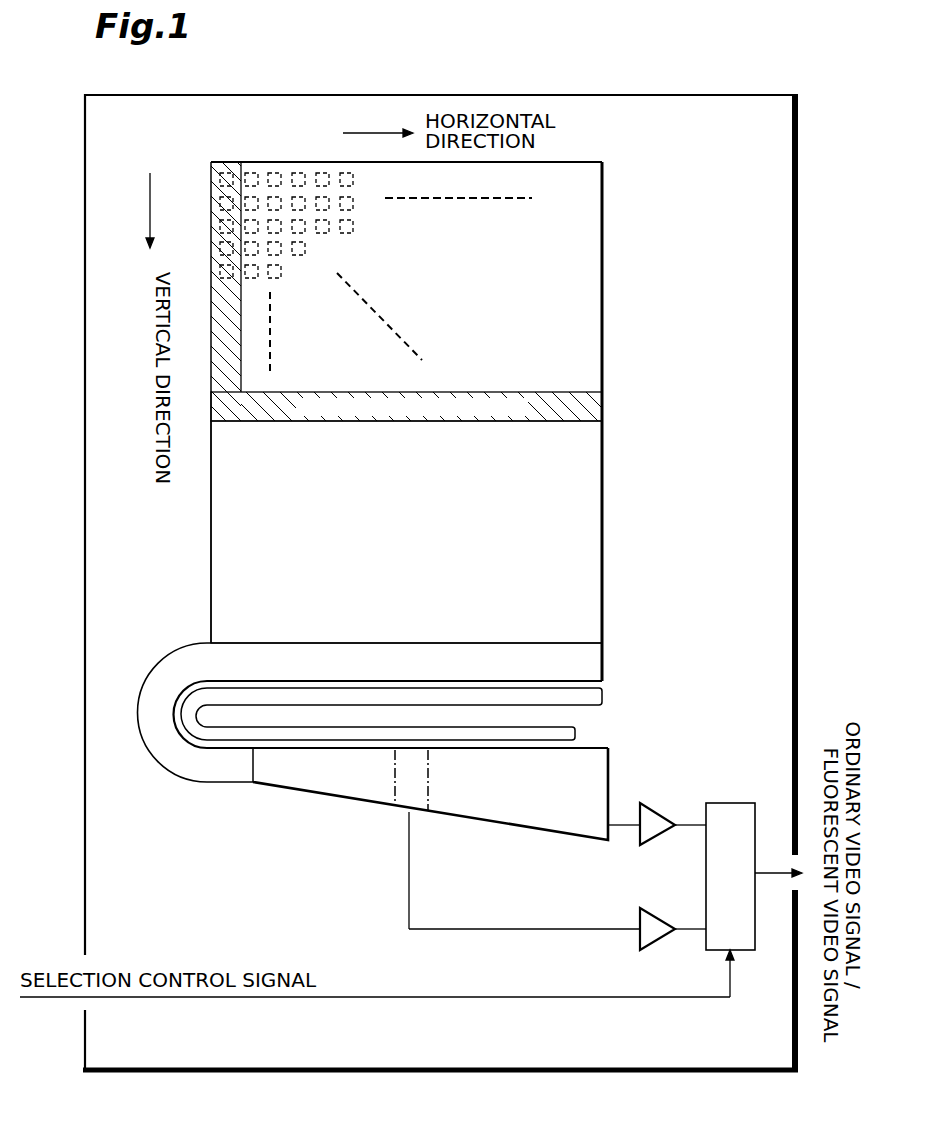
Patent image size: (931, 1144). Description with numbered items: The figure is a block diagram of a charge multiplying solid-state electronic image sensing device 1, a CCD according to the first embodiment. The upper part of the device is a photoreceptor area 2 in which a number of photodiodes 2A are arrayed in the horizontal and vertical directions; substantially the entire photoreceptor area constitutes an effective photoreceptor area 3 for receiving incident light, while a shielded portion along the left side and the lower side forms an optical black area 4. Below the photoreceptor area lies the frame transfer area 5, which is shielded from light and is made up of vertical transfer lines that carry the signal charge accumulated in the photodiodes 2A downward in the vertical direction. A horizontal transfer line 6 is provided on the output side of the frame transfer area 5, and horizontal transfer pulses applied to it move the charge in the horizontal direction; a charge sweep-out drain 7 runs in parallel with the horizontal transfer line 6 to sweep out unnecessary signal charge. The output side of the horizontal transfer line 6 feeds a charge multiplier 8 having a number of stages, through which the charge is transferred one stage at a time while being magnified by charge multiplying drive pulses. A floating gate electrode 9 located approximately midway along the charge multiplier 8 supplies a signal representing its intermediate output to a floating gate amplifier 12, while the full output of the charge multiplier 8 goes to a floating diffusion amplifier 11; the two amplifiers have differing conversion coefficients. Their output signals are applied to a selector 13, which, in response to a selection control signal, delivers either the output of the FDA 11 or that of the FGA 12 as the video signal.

The charge multiplying solid-state electronic image sensing device 1 is at (800, 224).
The photoreceptor area 2 is at (585, 243).
The photodiodes 2A is at (297, 170).
The effective photoreceptor area 3 is at (532, 169).
The optical black area 4 is at (226, 389).
The frame transfer area 5 is at (580, 510).
The horizontal transfer line 6 is at (590, 663).
The charge sweep-out drain 7 is at (590, 698).
The charge multiplier 8 is at (528, 816).
The floating gate electrode 9 is at (400, 800).
The floating diffusion amplifier 11 is at (655, 815).
The floating gate amplifier 12 is at (653, 922).
The selector 13 is at (720, 808).